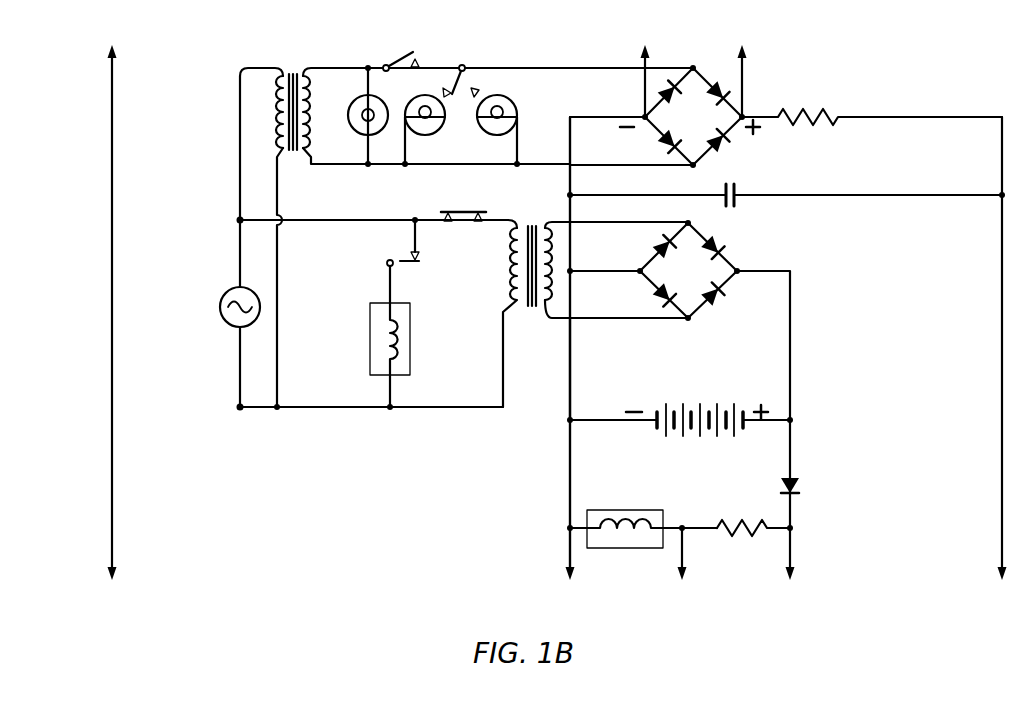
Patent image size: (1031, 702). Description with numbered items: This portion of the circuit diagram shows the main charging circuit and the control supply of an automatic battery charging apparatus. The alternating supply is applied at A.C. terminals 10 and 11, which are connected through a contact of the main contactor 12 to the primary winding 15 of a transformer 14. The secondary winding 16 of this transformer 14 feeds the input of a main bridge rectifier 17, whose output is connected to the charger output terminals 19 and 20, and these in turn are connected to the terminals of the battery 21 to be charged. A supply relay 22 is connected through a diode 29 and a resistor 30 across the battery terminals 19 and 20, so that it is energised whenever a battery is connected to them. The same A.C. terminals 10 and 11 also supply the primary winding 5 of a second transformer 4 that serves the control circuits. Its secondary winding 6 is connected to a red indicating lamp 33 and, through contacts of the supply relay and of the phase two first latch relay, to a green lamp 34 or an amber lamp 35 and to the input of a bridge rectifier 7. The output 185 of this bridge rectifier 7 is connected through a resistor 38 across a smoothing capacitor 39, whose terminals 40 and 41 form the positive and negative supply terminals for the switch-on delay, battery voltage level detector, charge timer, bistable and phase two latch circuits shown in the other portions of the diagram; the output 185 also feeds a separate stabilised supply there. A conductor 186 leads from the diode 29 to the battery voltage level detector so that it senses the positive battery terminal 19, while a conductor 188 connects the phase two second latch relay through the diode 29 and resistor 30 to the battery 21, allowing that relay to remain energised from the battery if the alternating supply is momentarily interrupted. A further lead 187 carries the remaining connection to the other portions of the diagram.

The AC supply lead 187 is at (120, 57).
The A.C. terminal 10 is at (238, 220).
The A.C. terminal 11 is at (238, 407).
The transformer 4 is at (286, 66).
The primary winding 5 is at (276, 118).
The secondary winding 6 is at (314, 104).
The red indicating lamp 33 is at (355, 128).
The amber lamp 35 is at (421, 132).
The green lamp 34 is at (506, 128).
The negative supply terminal 41 is at (643, 50).
The output 185 is at (750, 50).
The bridge rectifier 7 is at (700, 128).
The resistor 38 is at (812, 109).
The positive supply terminal 40 is at (925, 115).
The smoothing capacitor 39 is at (736, 187).
The primary winding 15 is at (510, 258).
The transformer 14 is at (534, 320).
The secondary winding 16 is at (556, 244).
The charger output terminal 20 is at (573, 332).
The main contactor 12 is at (378, 328).
The main bridge rectifier 17 is at (707, 284).
The charger output terminal 19 is at (790, 384).
The battery 21 is at (710, 408).
The supply relay 22 is at (607, 512).
The conductor 188 is at (659, 556).
The resistor 30 is at (737, 520).
The diode 29 is at (798, 486).
The conductor 186 is at (797, 573).